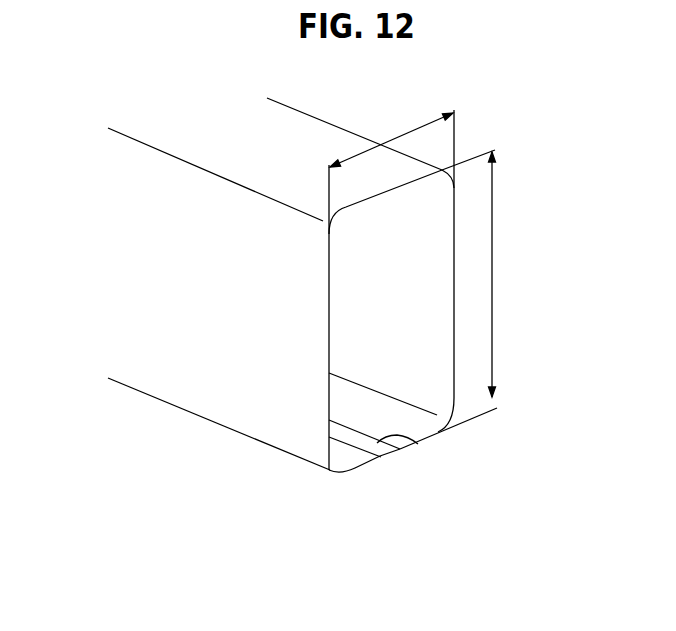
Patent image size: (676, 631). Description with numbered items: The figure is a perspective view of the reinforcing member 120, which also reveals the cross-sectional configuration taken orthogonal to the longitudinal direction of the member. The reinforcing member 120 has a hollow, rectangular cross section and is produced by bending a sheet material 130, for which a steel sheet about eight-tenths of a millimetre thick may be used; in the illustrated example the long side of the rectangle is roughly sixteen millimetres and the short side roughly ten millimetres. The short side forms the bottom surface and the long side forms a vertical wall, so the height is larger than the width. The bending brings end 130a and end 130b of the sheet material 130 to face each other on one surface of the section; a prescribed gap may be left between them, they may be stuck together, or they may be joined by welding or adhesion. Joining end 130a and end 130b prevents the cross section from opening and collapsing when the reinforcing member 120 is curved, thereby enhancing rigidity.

The reinforcing member 120 is at (316, 151).
The sheet material 130 is at (339, 460).
The end of the bent sheet material 130a is at (381, 457).
The end of the bent sheet material 130b is at (413, 445).